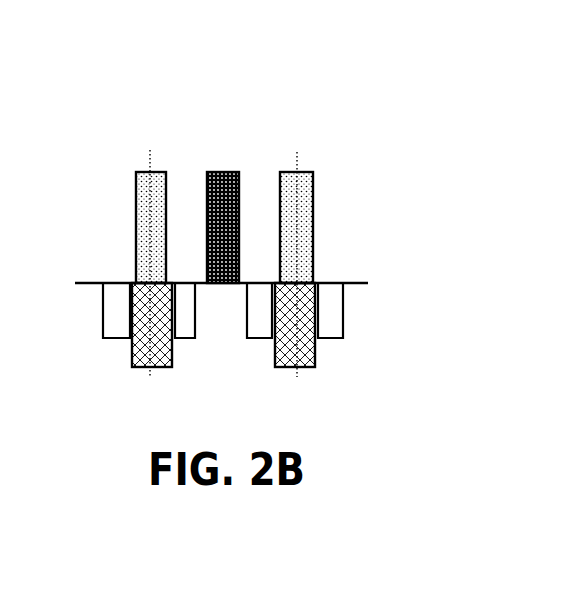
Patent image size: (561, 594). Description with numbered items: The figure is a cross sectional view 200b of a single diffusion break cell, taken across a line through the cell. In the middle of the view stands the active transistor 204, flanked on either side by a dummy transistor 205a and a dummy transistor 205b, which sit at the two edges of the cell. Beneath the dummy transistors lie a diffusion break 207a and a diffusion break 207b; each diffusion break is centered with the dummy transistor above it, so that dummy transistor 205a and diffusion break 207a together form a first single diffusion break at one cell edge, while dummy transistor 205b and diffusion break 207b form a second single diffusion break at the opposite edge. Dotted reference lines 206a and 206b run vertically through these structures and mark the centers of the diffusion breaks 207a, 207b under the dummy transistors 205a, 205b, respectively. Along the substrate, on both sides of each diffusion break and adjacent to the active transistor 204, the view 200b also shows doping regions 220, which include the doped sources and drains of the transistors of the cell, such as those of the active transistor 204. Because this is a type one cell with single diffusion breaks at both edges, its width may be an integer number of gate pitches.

The cross sectional view 200b is at (255, 28).
The active transistor 204 is at (215, 172).
The dummy transistor 205a is at (141, 172).
The dummy transistor 205b is at (309, 173).
The reference line 206a is at (150, 150).
The reference line 206b is at (296, 152).
The diffusion break 207a is at (142, 348).
The diffusion break 207b is at (300, 355).
The doping regions 220 is at (113, 312).